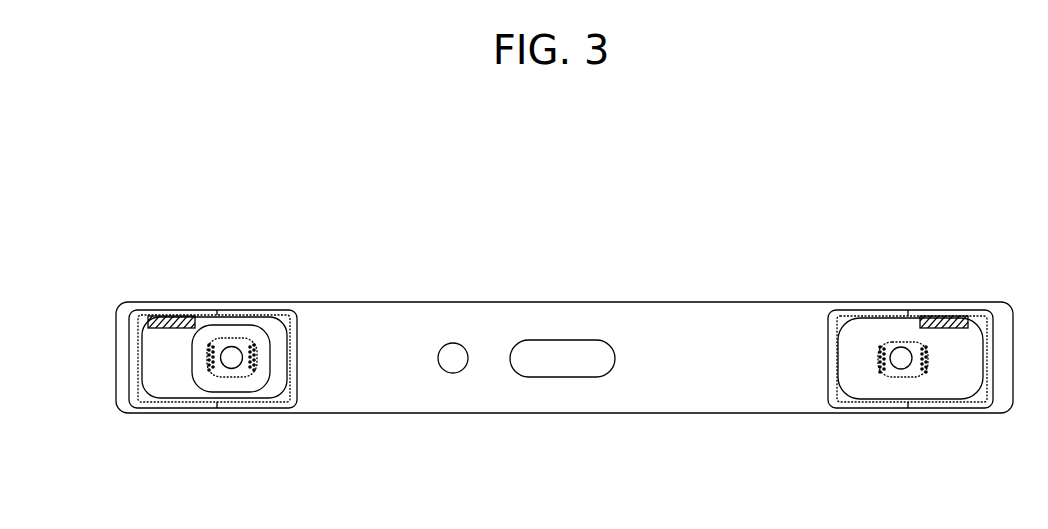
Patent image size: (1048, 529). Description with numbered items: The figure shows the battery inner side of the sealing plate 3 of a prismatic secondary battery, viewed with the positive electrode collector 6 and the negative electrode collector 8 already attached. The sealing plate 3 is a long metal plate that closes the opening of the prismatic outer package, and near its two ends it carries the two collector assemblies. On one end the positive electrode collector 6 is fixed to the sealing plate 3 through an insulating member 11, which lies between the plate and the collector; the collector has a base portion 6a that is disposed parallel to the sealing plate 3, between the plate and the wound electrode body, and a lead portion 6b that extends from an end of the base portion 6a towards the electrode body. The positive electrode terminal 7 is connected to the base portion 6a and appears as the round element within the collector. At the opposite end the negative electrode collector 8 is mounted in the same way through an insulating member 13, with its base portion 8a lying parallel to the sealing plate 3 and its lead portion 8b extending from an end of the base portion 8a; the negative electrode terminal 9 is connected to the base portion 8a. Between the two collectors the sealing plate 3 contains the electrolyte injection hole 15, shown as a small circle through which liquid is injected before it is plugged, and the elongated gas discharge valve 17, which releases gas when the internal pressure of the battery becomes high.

The sealing plate 3 is at (675, 367).
The positive electrode collector 6 is at (124, 368).
The base portion 6a is at (180, 387).
The lead portion 6b is at (163, 316).
The positive electrode terminal 7 is at (235, 363).
The negative electrode collector 8 is at (933, 418).
The base portion 8a is at (880, 387).
The lead portion 8b is at (945, 318).
The negative electrode terminal 9 is at (897, 352).
The insulating member 11 is at (137, 333).
The insulating member 13 is at (992, 377).
The electrolyte injection hole 15 is at (453, 356).
The gas discharge valve 17 is at (559, 365).